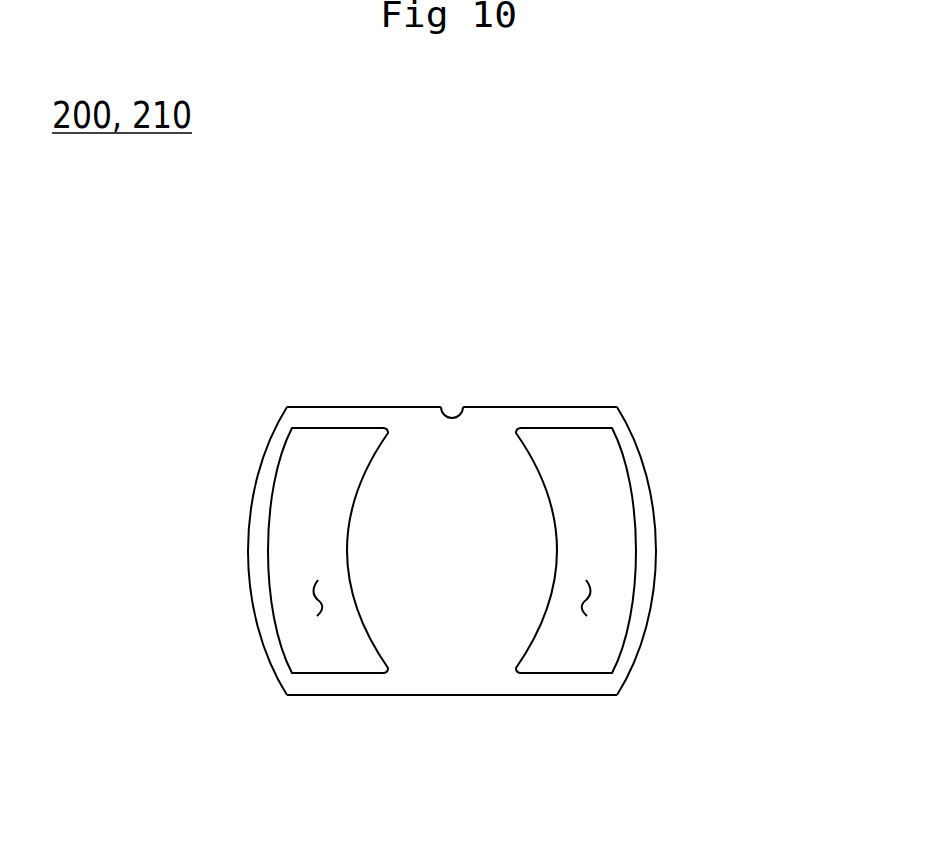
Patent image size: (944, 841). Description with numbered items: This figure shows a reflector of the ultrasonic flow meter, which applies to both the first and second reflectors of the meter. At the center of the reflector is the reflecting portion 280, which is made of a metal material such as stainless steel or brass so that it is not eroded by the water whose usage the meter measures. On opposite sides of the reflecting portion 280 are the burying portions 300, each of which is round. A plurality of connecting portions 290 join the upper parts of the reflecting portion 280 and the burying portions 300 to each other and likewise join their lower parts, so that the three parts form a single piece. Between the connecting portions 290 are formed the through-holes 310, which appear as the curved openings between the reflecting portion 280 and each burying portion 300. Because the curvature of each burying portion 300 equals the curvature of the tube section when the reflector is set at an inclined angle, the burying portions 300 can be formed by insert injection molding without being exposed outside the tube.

The reflecting portion 280 is at (477, 502).
The connecting portions 290 is at (323, 420).
The burying portions 300 is at (265, 527).
The through-holes 310 is at (316, 601).